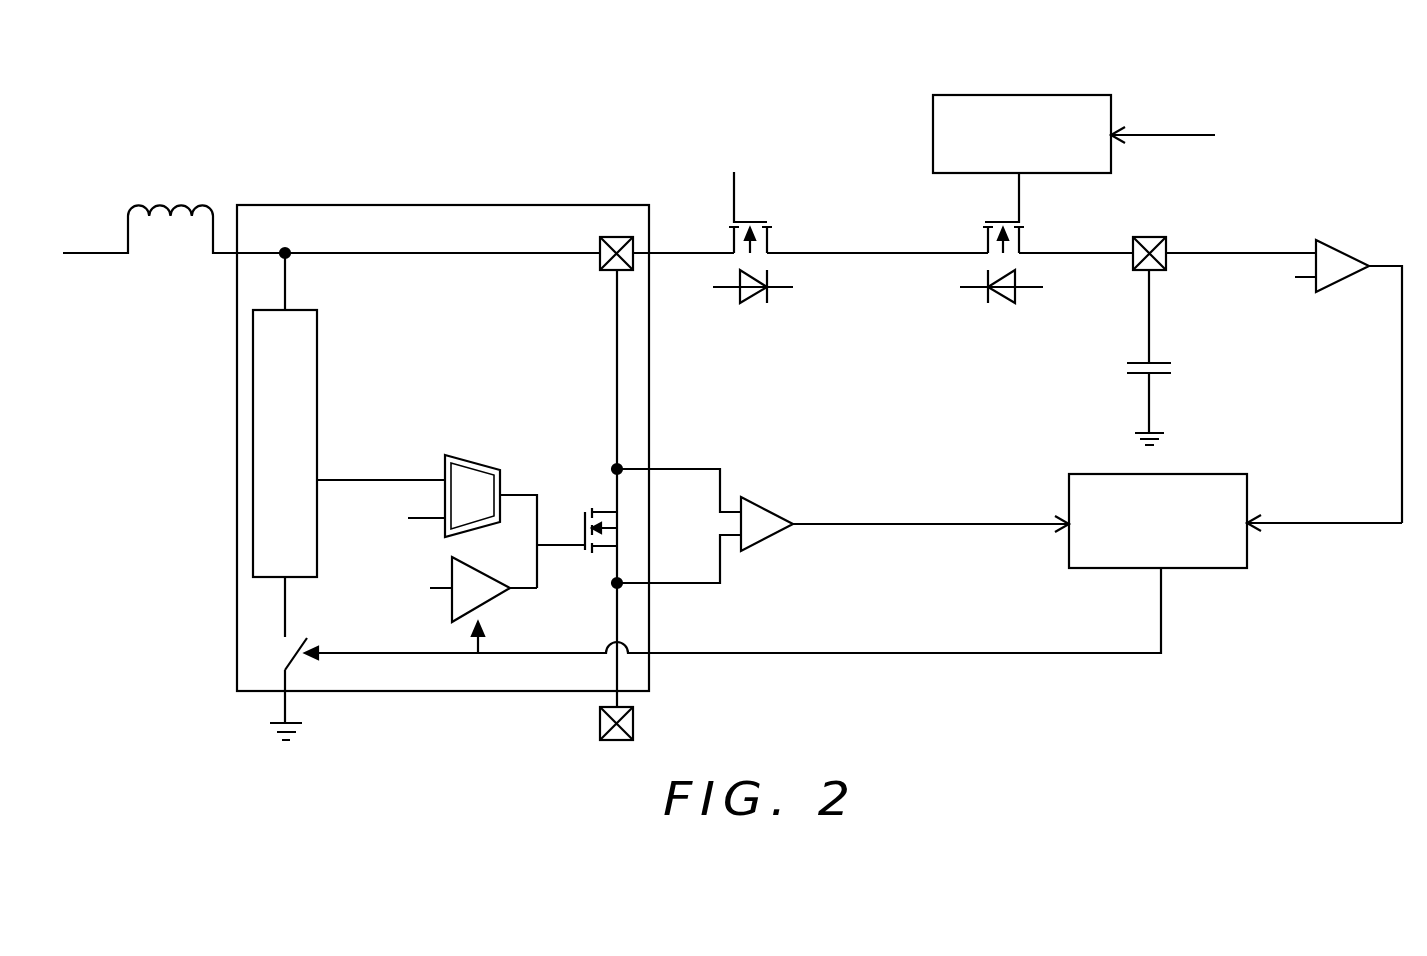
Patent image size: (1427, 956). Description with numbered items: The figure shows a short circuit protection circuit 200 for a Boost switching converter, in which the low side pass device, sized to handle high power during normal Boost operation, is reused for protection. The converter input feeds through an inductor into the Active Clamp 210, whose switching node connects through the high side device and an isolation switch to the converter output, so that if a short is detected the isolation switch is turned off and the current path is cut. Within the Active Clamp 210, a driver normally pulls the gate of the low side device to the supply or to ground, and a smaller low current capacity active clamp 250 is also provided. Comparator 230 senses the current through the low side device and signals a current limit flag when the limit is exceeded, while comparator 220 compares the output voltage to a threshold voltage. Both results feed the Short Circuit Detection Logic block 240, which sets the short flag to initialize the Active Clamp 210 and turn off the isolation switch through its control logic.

The short circuit protection circuit 200 is at (327, 116).
The active clamp 210 is at (478, 205).
The comparator 220 is at (1341, 247).
The comparator 230 is at (766, 503).
The Short Circuit Detection Logic block 240 is at (1222, 463).
The low current capacity active clamp 250 is at (300, 310).